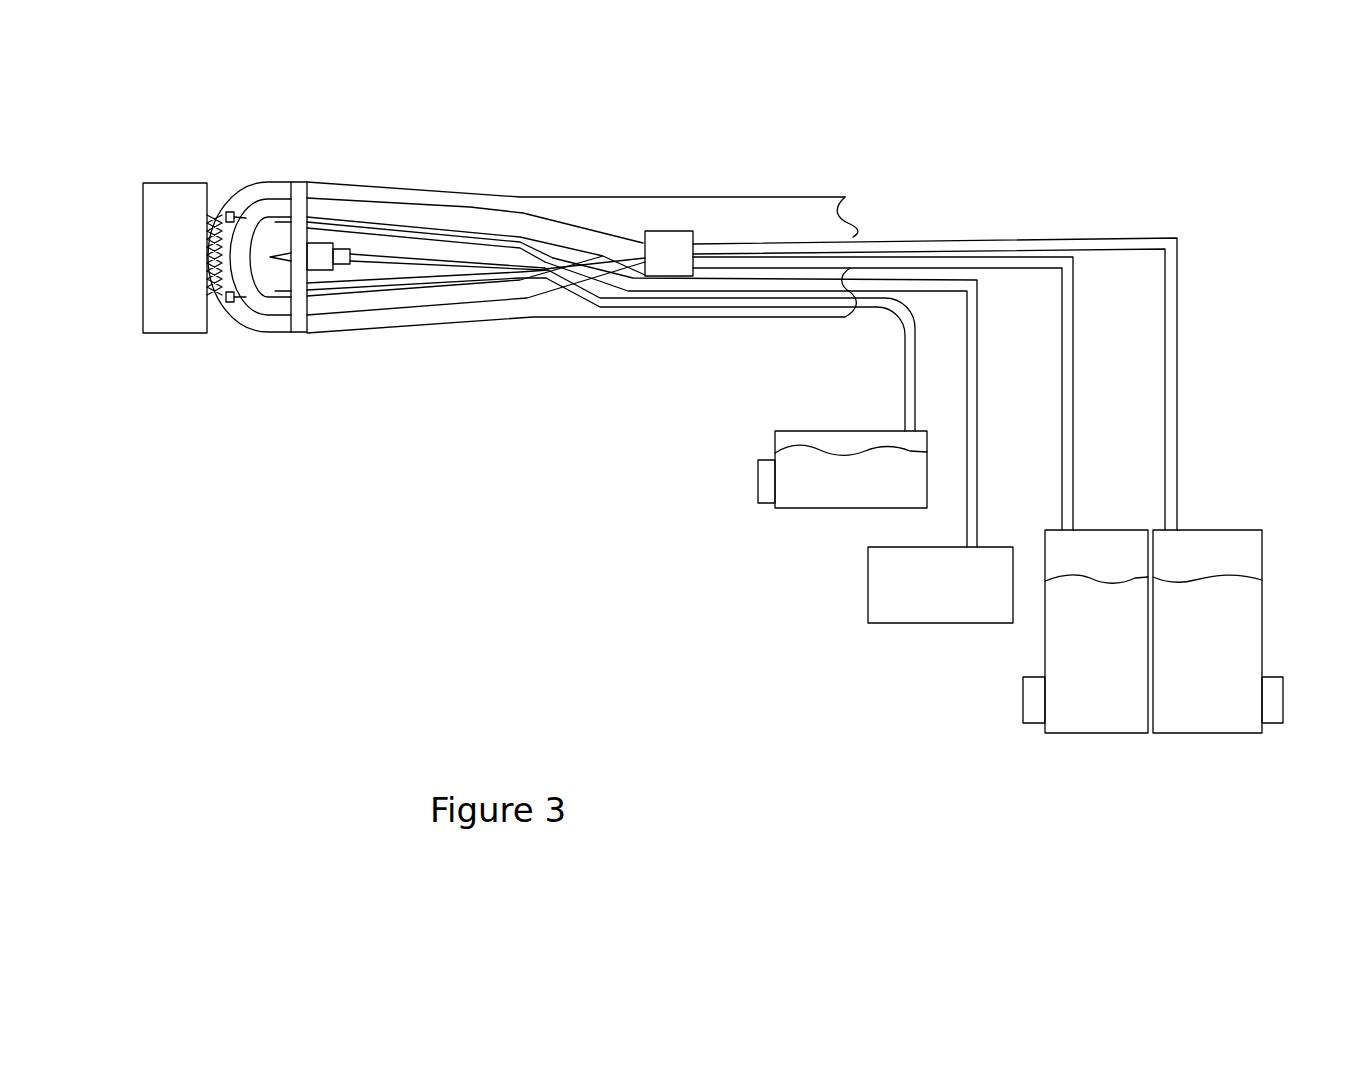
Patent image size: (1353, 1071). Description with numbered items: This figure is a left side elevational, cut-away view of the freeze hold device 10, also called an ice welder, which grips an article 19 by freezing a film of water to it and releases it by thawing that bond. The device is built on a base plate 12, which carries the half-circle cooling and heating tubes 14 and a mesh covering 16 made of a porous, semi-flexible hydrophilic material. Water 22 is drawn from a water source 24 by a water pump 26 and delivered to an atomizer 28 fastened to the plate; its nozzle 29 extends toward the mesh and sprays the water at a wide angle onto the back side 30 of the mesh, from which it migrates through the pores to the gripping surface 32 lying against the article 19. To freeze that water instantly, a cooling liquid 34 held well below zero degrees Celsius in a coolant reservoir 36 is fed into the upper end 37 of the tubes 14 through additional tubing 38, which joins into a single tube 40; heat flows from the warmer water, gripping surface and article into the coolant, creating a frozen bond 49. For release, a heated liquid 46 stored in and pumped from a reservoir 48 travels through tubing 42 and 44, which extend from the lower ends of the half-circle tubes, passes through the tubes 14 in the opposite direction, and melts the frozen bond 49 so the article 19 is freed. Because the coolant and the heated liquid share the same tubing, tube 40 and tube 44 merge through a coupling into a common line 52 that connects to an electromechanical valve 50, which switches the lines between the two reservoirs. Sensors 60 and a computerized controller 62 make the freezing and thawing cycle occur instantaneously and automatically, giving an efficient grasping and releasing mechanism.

The freeze hold device 10 is at (792, 115).
The base plate 12 is at (300, 333).
The cooling and heating tubes 14 is at (262, 185).
The mesh covering 16 is at (248, 318).
The article 19 is at (173, 333).
The water 22 is at (802, 498).
The water source 24 is at (775, 450).
The water pump 26 is at (758, 477).
The atomizer 28 is at (330, 243).
The nozzle 29 is at (278, 256).
The back side 30 is at (268, 330).
The gripping surface 32 is at (247, 199).
The cooling liquid 34 is at (1217, 700).
The coolant reservoir 36 is at (1262, 602).
The upper end 37 is at (310, 157).
The additional tubing 38 is at (457, 215).
The single tube 40 is at (555, 232).
The heating tubing 42 is at (478, 320).
The heating tubing 44 is at (545, 285).
The heated liquid 46 is at (1107, 707).
The heated liquid reservoir 48 is at (1045, 638).
The frozen bond 49 is at (218, 214).
The electromechanical valve 50 is at (673, 232).
The common line 52 is at (625, 233).
The sensors 60 is at (228, 213).
The computerized controller 62 is at (868, 586).